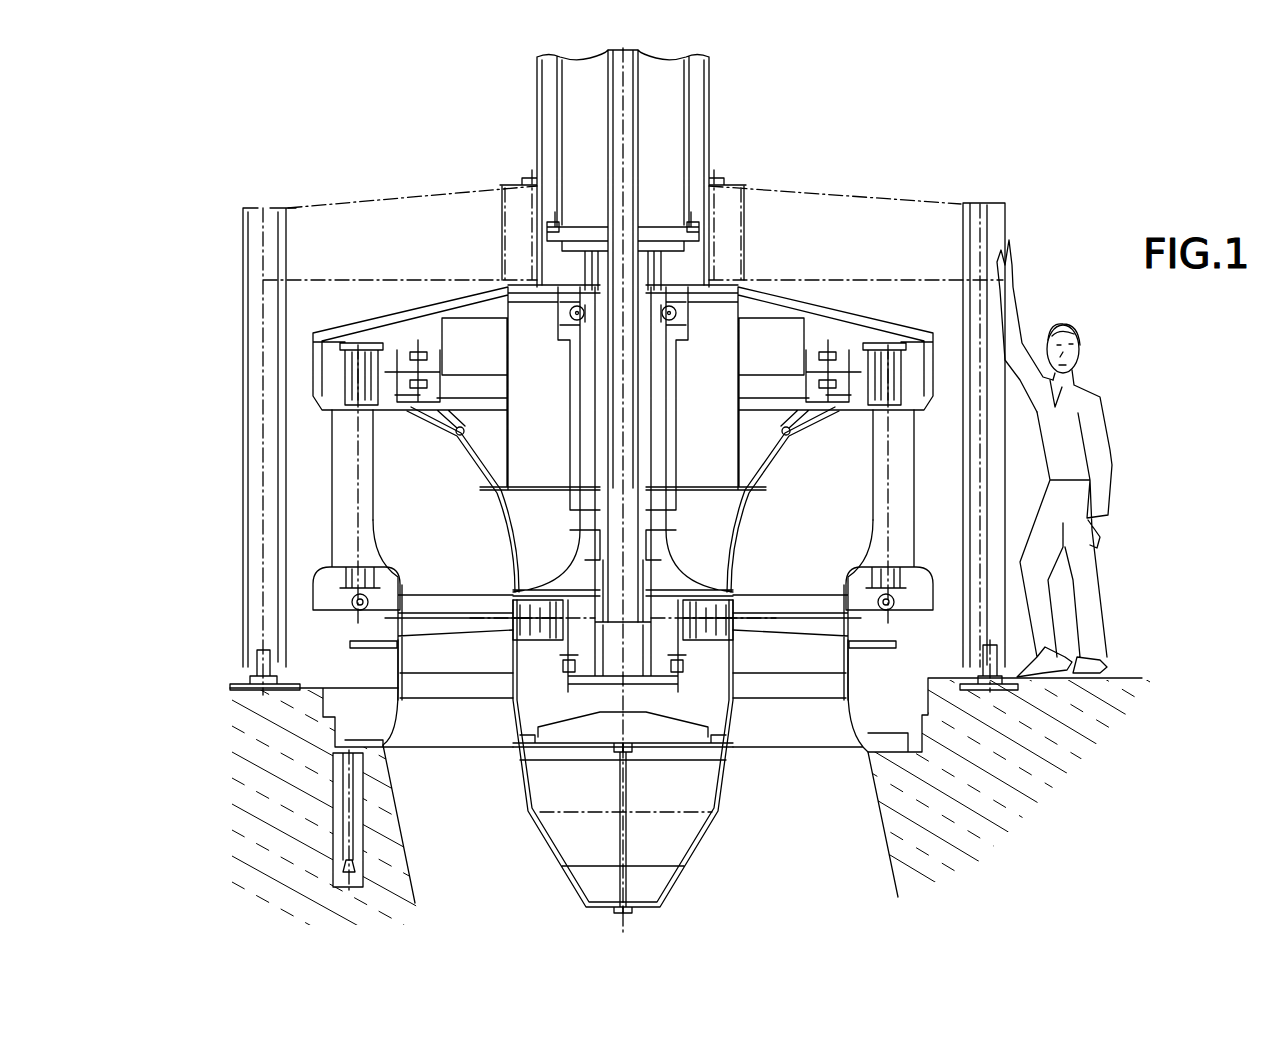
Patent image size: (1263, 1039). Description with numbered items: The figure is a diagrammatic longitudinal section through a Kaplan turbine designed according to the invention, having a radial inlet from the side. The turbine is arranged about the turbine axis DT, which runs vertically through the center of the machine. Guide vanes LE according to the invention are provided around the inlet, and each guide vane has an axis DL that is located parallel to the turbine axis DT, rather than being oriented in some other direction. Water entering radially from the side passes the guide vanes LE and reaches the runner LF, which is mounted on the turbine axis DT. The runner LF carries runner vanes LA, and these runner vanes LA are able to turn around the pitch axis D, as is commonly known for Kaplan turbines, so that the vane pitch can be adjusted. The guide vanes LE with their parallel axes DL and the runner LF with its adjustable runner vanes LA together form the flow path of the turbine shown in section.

The turbine axis DT is at (622, 102).
The guide vane axis DL is at (890, 458).
The guide vanes LE is at (878, 531).
The pitch axis D is at (425, 620).
The runner vanes LA is at (780, 600).
The runner LF is at (680, 840).